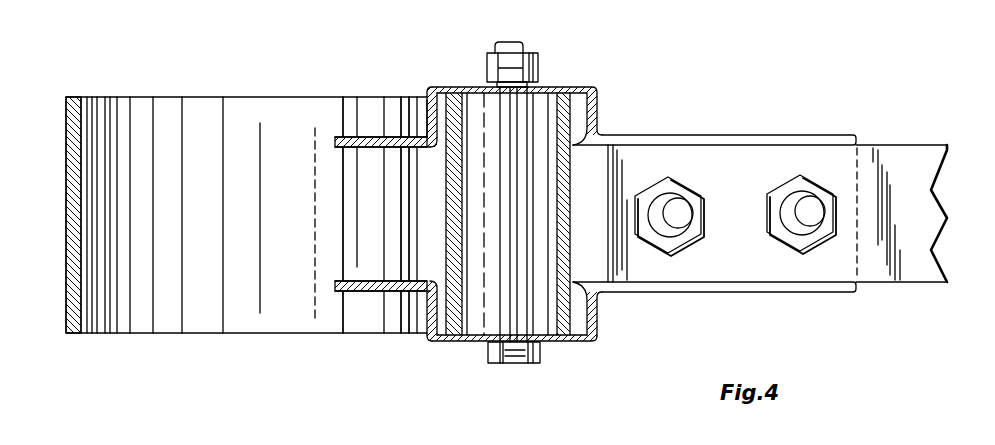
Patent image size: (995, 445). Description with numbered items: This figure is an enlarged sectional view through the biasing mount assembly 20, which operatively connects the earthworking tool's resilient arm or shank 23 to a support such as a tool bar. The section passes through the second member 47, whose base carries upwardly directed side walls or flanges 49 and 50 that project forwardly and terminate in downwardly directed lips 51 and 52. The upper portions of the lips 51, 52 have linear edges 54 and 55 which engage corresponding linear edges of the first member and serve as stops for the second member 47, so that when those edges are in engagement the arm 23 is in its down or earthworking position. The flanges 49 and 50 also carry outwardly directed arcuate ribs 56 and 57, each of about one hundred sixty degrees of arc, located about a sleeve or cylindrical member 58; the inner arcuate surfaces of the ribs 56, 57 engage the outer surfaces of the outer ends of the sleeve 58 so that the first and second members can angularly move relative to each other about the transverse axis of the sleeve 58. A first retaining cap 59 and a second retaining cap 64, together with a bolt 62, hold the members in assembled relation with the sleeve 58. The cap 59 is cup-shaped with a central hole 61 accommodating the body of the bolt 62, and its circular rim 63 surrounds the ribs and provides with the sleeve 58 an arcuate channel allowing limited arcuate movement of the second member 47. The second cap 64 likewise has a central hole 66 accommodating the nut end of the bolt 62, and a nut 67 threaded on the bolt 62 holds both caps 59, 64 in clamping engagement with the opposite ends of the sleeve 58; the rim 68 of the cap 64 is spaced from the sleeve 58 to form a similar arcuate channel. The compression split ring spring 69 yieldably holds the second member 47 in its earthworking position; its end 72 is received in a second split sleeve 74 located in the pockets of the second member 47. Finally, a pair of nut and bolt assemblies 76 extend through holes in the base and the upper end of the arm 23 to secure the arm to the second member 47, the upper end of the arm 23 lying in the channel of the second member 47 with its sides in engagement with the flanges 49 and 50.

The biasing mount assembly 20 is at (223, 90).
The resilient arm spring or shank 23 is at (878, 148).
The second member 47 is at (718, 134).
The flange 49 is at (706, 292).
The flange 50 is at (667, 133).
The lip 51 is at (341, 288).
The lip 52 is at (337, 147).
The linear edge 54 is at (368, 150).
The linear edge 55 is at (363, 281).
The arcuate rib 56 is at (441, 342).
The arcuate rib 57 is at (442, 102).
The sleeve 58 is at (583, 119).
The first retaining cap 59 is at (565, 343).
The central hole 61 is at (488, 334).
The bolt 62 is at (521, 364).
The circular rim 63 is at (583, 315).
The second retaining cap 64 is at (558, 87).
The central hole 66 is at (471, 214).
The nut 67 is at (542, 60).
The circular rim 68 is at (426, 109).
The compression split ring spring 69 is at (81, 117).
The end 72 is at (350, 112).
The second split sleeve 74 is at (403, 328).
The nut and bolt assemblies 76 is at (767, 208).